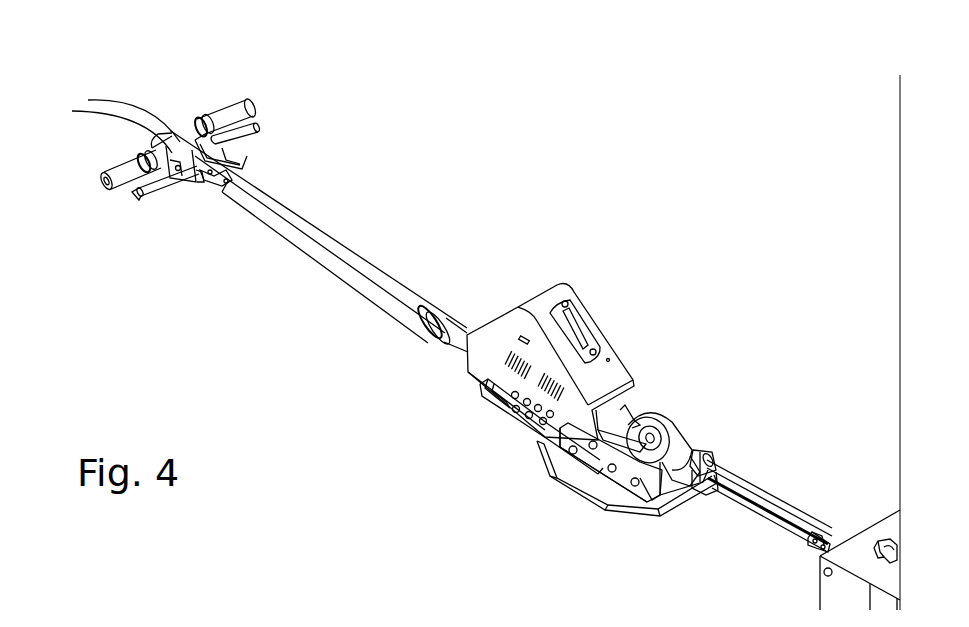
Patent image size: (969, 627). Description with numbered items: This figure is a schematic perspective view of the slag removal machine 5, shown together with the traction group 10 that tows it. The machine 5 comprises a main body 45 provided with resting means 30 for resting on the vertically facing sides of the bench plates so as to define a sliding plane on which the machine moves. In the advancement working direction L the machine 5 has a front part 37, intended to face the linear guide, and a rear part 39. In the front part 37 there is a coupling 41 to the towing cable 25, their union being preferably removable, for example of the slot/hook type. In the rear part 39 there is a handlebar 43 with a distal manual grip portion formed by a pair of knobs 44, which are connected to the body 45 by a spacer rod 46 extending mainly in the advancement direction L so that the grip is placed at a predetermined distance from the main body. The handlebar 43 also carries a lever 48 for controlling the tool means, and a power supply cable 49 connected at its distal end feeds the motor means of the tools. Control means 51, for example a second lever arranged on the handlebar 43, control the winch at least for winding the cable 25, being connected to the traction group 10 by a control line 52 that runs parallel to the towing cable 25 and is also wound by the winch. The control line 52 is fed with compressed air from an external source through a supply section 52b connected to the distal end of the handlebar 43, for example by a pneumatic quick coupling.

The slag removal machine 5 is at (656, 174).
The traction group 10 is at (856, 531).
The towing cable 25 is at (752, 509).
The resting means 30 is at (553, 492).
The front part 37 is at (716, 437).
The rear part 39 is at (380, 206).
The coupling 41 is at (661, 496).
The handlebar 43 is at (319, 262).
The knobs 44 is at (217, 103).
The main body 45 is at (522, 303).
The spacer rod 46 is at (295, 208).
The lever 48 is at (138, 192).
The power supply cable 49 is at (117, 97).
The control means 51 is at (256, 121).
The control line 52 is at (739, 473).
The supply section 52b is at (94, 115).
The traction direction L is at (725, 363).